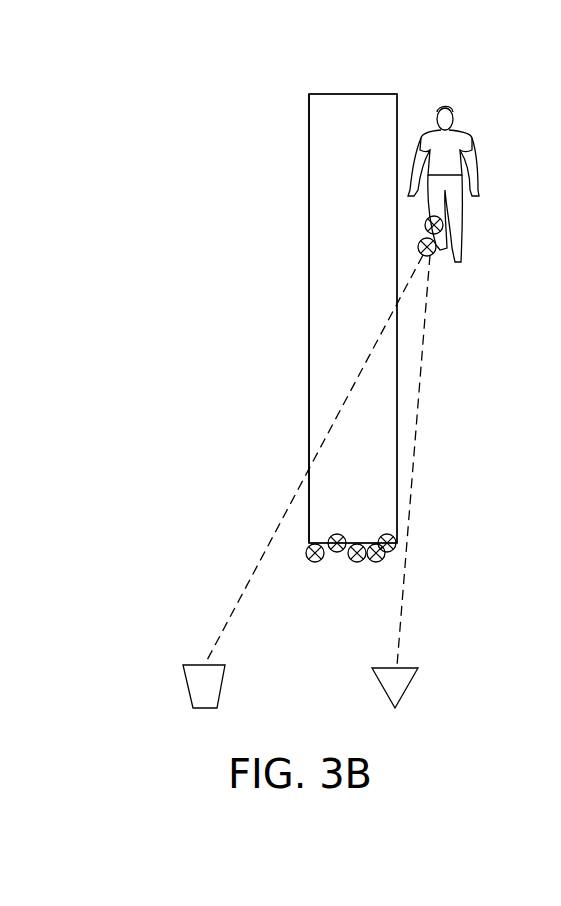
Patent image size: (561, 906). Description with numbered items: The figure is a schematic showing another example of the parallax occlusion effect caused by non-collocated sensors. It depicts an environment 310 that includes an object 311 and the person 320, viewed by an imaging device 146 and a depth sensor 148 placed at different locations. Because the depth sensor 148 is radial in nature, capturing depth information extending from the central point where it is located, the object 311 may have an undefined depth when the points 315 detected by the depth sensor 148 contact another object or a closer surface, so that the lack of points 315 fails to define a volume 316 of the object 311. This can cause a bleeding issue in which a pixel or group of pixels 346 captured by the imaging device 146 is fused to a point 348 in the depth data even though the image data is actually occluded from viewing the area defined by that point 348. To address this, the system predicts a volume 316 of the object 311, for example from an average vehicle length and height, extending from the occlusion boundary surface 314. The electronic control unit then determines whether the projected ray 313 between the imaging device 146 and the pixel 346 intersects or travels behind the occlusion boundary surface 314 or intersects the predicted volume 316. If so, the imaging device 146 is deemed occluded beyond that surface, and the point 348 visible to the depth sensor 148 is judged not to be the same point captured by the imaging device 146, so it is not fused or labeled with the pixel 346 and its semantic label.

The environment 310 is at (264, 100).
The object 311 is at (278, 318).
The projected ray 313 is at (350, 386).
The occlusion boundary surface 314 is at (362, 537).
The points 315 is at (388, 564).
The predicted volume 316 is at (309, 210).
The person 320 is at (477, 126).
The pixel 346 is at (418, 247).
The point 348 is at (424, 225).
The imaging device 146 is at (188, 687).
The depth sensor 148 is at (410, 685).